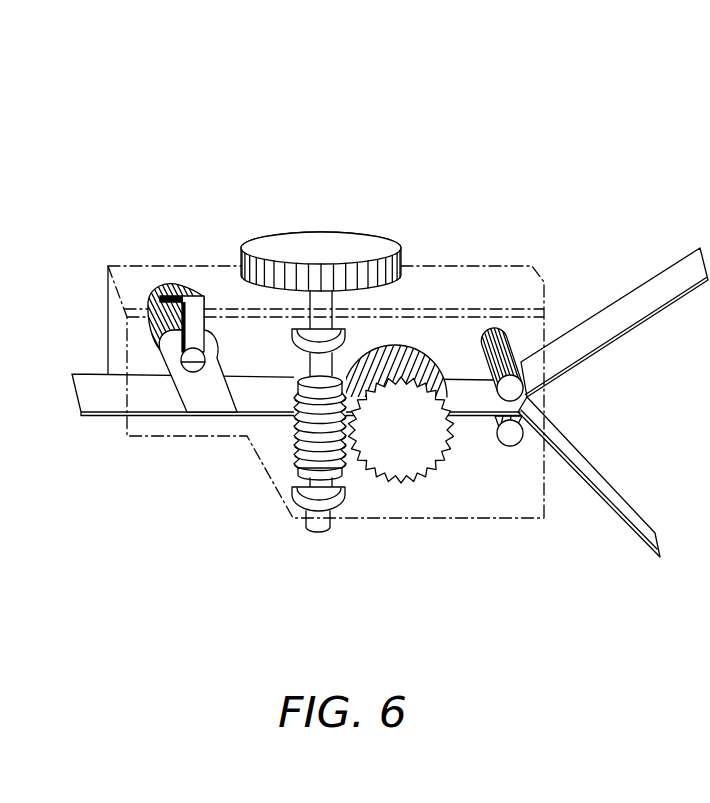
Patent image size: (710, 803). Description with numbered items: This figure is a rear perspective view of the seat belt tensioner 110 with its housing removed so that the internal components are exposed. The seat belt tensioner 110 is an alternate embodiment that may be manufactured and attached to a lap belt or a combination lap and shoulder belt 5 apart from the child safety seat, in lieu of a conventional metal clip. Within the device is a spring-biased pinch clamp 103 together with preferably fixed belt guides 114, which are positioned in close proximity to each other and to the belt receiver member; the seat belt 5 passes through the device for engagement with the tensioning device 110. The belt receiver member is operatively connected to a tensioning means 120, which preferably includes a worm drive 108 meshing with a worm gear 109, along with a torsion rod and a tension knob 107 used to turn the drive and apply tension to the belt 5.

The seat belt 5 is at (627, 333).
The spring-biased pinch clamp 103 is at (149, 300).
The tension knob 107 is at (372, 232).
The worm drive 108 is at (294, 450).
The worm gear 109 is at (417, 477).
The seat belt tensioner 110 is at (373, 86).
The fixed belt guides 114 is at (497, 326).
The tensioning means 120 is at (359, 500).